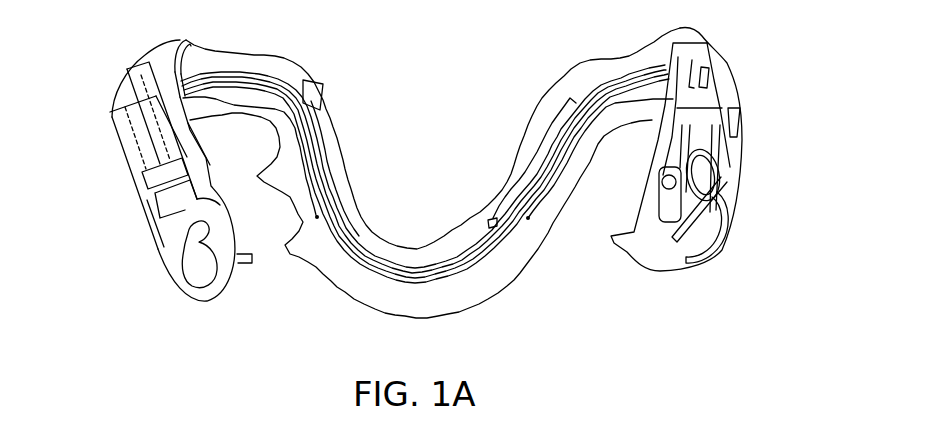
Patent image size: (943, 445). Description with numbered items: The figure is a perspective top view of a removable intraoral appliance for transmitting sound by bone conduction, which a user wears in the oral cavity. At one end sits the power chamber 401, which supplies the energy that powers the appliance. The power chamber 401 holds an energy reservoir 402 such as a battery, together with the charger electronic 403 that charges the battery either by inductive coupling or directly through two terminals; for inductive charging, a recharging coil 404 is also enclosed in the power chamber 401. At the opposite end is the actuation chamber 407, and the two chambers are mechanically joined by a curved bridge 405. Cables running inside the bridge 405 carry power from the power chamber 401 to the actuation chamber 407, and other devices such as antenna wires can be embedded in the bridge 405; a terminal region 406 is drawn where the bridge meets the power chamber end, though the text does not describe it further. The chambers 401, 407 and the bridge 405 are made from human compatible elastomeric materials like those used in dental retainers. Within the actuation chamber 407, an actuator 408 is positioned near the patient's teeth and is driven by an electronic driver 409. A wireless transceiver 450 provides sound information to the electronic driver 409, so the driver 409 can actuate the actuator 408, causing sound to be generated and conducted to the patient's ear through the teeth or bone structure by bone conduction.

The power chamber 401 is at (129, 71).
The energy reservoir 402 is at (114, 119).
The charger electronic 403 is at (143, 177).
The recharging coil 404 is at (160, 218).
The bridge 405 is at (287, 58).
The cable terminal 406 is at (320, 83).
The actuation chamber 407 is at (733, 87).
The actuator 408 is at (727, 130).
The electronic driver 409 is at (707, 177).
The wireless transceiver 450 is at (707, 230).